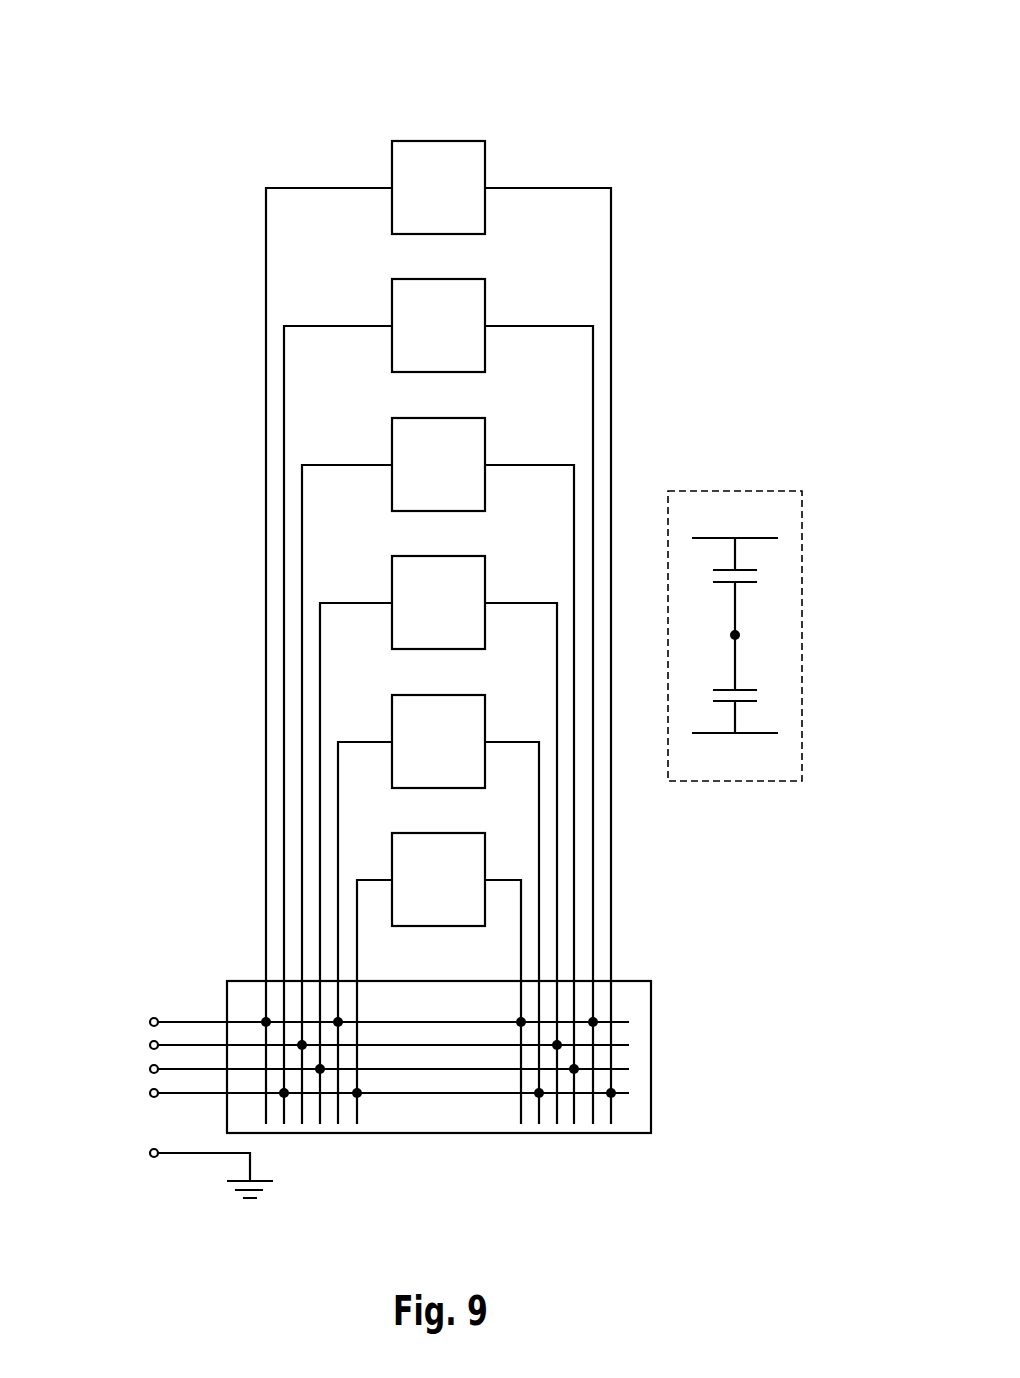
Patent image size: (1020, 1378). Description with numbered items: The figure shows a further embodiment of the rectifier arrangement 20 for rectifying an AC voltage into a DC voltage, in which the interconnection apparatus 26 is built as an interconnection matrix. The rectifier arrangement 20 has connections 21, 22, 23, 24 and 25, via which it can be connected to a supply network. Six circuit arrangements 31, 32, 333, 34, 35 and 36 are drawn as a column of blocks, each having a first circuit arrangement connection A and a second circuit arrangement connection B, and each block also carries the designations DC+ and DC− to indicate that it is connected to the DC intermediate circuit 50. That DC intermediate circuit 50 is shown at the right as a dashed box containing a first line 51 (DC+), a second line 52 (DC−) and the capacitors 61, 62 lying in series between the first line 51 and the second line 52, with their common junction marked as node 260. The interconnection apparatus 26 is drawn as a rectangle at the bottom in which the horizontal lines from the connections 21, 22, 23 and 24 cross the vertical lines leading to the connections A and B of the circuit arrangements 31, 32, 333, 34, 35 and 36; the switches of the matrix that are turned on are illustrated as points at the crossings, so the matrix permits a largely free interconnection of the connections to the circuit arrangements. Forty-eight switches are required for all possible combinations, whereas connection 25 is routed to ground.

The rectifier arrangement 20 is at (588, 115).
The connection 21 is at (148, 1022).
The connection 22 is at (148, 1045).
The connection 23 is at (148, 1069).
The connection 24 is at (148, 1093).
The connection 25 is at (148, 1153).
The interconnection apparatus 26 is at (627, 981).
The circuit arrangement 31 is at (467, 141).
The circuit arrangement 32 is at (467, 279).
The third converter unit 333 is at (467, 418).
The circuit arrangement 34 is at (467, 556).
The circuit arrangement 35 is at (467, 695).
The circuit arrangement 36 is at (467, 833).
The DC intermediate circuit 50 is at (810, 496).
The first line 51 is at (745, 538).
The second line 52 is at (745, 733).
The capacitor 61 is at (746, 583).
The capacitor 62 is at (746, 702).
The midpoint node 260 is at (740, 635).